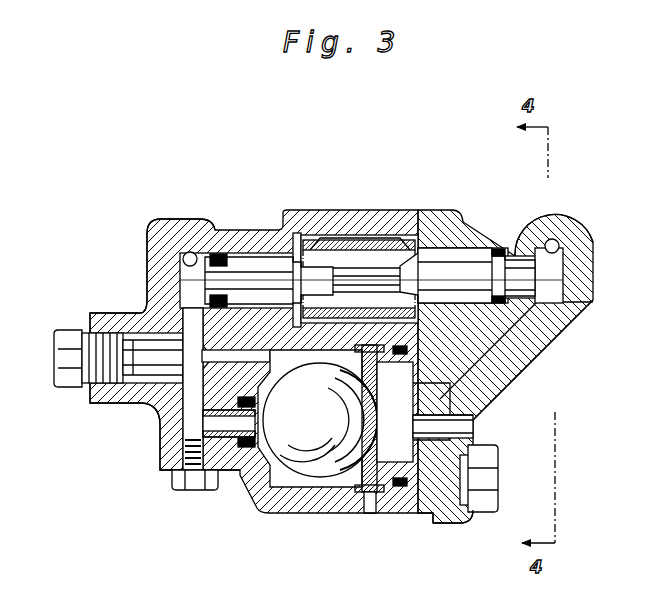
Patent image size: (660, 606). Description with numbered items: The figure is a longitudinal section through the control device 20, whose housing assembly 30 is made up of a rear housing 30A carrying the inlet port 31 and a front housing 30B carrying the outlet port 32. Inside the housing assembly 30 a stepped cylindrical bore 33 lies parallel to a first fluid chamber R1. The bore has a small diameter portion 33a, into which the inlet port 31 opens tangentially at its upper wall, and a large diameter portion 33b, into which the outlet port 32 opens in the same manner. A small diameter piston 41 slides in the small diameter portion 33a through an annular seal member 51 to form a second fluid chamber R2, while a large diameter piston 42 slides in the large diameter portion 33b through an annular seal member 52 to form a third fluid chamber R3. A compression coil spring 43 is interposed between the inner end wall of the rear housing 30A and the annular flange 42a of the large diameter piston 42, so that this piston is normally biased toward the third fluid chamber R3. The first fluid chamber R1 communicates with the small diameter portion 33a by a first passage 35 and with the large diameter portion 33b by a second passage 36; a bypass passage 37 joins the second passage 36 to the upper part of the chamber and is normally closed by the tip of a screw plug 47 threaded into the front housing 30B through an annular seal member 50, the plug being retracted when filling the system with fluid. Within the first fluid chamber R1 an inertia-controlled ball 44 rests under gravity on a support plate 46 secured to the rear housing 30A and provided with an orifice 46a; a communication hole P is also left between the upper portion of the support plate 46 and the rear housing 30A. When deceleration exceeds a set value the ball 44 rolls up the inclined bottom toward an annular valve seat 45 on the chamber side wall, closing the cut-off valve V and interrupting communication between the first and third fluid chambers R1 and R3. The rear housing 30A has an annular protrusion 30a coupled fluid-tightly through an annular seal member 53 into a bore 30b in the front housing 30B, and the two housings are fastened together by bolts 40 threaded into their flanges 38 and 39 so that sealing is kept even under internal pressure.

The control device 20 is at (291, 172).
The housing assembly 30 is at (408, 201).
The rear housing 30A is at (567, 313).
The front housing 30B is at (92, 315).
The annular protrusion 30a is at (378, 516).
The bore 30b is at (367, 496).
The inlet port 31 is at (558, 247).
The outlet port 32 is at (182, 250).
The stepped cylindrical bore 33 is at (372, 232).
The small diameter portion 33a is at (522, 252).
The large diameter portion 33b is at (258, 258).
The first passage 35 is at (525, 333).
The second passage 36 is at (159, 424).
The bypass passage 37 is at (248, 349).
The flange 38 is at (461, 518).
The flange 39 is at (425, 516).
The fastening bolts 40 is at (492, 485).
The small diameter piston 41 is at (458, 257).
The large diameter piston 42 is at (245, 262).
The annular flange 42a is at (298, 260).
The compression coil spring 43 is at (336, 240).
The inertia-controlled ball 44 is at (318, 418).
The annular valve seat 45 is at (255, 408).
The support plate 46 is at (471, 437).
The orifice 46a is at (471, 414).
The screw plug 47 is at (66, 354).
The annular seal member 50 is at (146, 404).
The annular seal member 51 is at (498, 256).
The annular seal member 52 is at (206, 254).
The annular seal member 53 is at (420, 512).
The communication hole P is at (413, 412).
The cut-off valve V is at (244, 468).
The first fluid chamber R1 is at (276, 480).
The second fluid chamber R2 is at (548, 281).
The third fluid chamber R3 is at (188, 306).